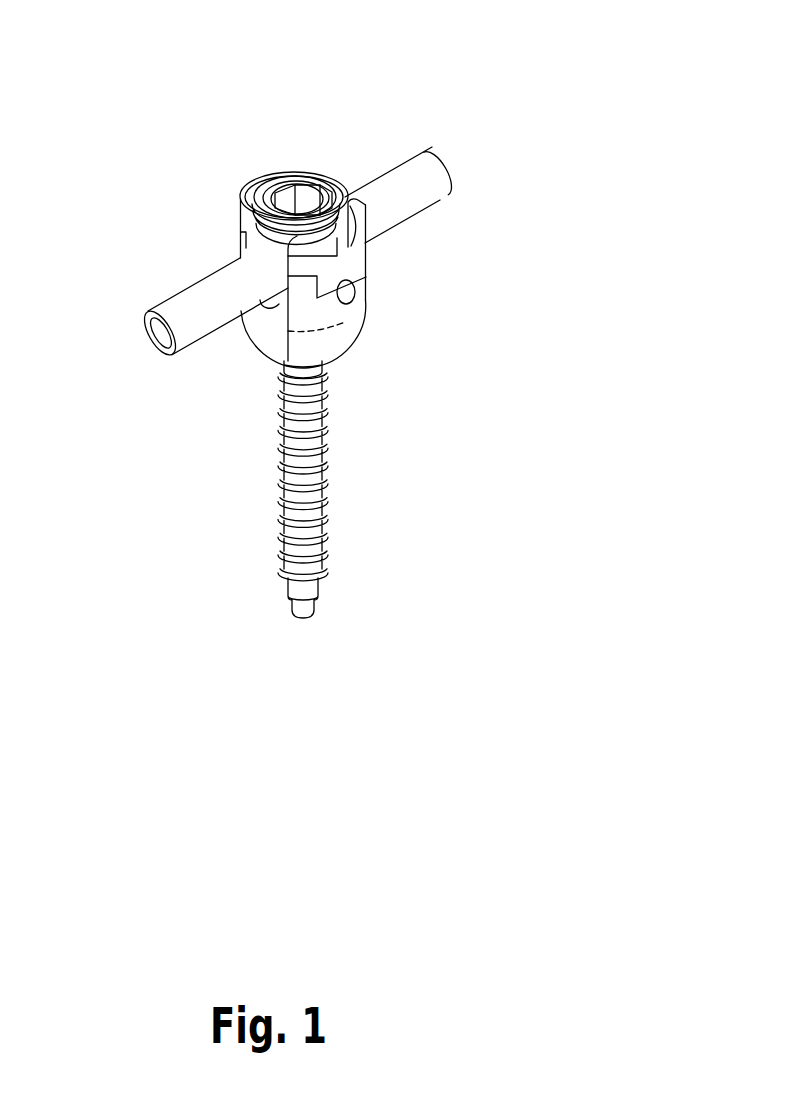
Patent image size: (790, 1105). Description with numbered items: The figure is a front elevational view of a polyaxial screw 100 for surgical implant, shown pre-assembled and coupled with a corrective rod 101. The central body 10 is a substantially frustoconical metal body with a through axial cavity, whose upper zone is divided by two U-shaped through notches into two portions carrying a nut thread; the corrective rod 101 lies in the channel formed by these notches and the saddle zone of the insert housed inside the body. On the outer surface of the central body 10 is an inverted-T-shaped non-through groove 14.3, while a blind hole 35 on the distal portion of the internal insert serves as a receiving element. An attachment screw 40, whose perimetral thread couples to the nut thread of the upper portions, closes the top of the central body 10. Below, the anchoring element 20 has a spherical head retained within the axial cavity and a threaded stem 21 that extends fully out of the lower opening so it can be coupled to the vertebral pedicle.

The polyaxial screw 100 is at (393, 316).
The corrective rod 101 is at (190, 287).
The central body 10 is at (396, 326).
The non-through groove 14.3 is at (348, 264).
The blind hole 35 is at (366, 302).
The attachment screw 40 is at (324, 170).
The anchoring element 20 is at (345, 503).
The threaded stem 21 is at (306, 590).